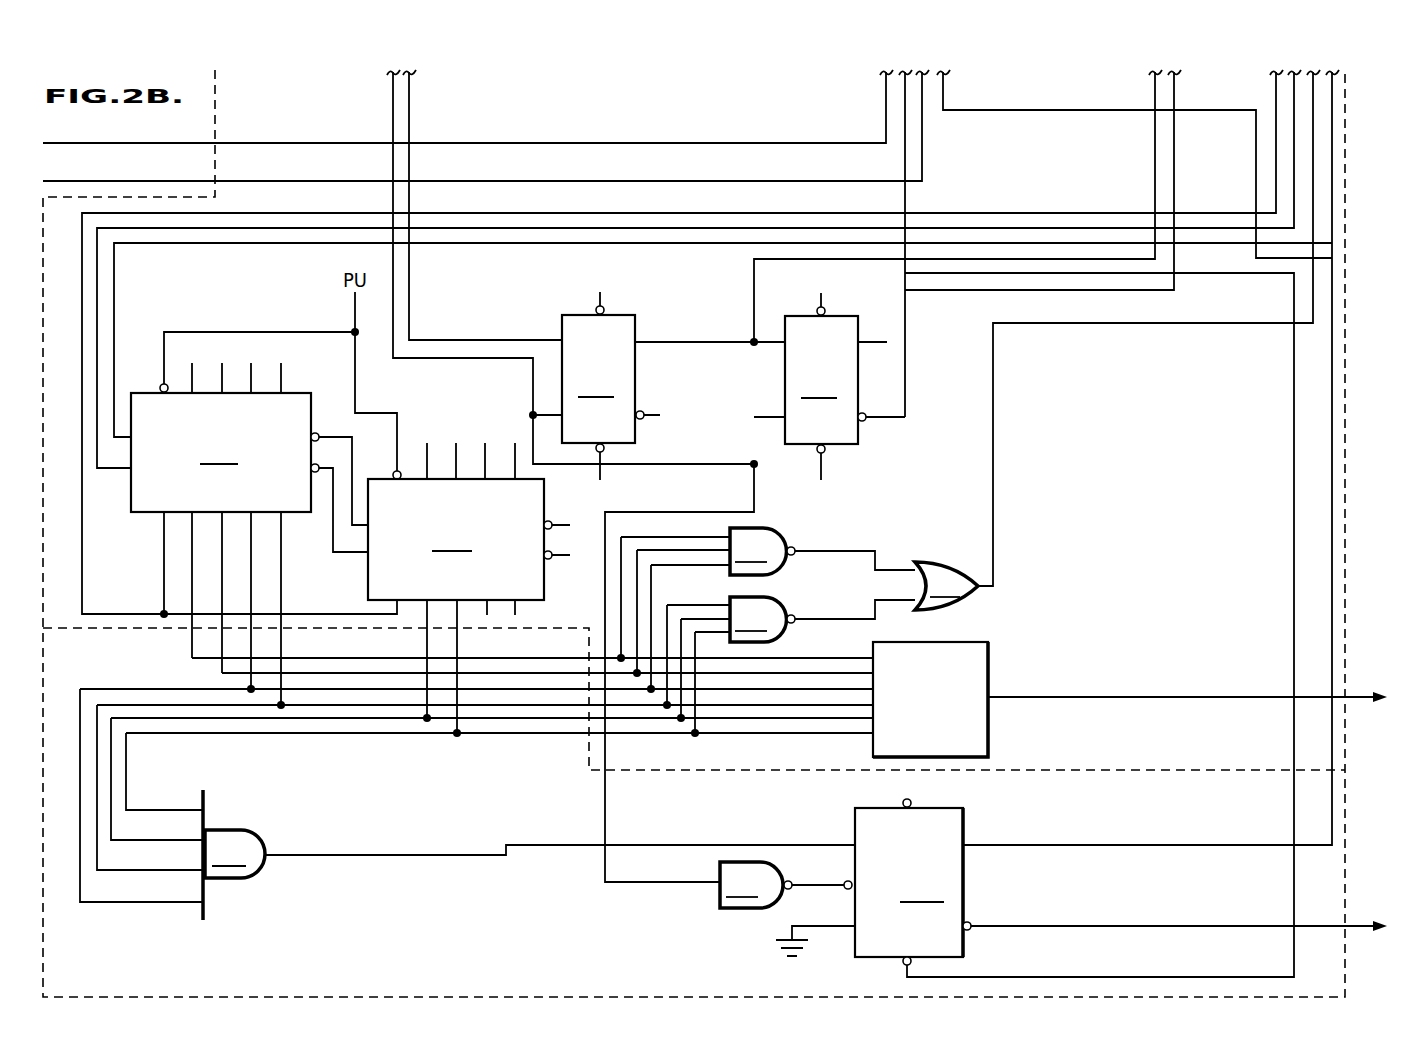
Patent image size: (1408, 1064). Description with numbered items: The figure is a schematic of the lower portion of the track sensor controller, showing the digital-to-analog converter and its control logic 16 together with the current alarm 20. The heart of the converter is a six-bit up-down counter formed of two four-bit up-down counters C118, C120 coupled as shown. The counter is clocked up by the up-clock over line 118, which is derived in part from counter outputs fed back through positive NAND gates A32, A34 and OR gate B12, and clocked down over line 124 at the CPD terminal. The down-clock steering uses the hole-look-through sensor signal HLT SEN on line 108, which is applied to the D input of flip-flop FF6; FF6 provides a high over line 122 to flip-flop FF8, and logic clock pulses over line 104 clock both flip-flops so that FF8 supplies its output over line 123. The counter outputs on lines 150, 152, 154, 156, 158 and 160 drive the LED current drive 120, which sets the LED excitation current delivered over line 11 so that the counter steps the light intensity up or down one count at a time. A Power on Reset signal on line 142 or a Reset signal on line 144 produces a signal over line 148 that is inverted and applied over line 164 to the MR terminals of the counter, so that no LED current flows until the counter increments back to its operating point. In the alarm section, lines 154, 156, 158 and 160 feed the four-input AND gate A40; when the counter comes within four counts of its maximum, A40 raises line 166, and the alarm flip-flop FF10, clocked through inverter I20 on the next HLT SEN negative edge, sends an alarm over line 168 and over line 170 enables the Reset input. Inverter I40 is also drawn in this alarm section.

The LED current drive line 11 is at (1080, 698).
The digital-to-analog converter and control logic 16 is at (43, 548).
The current alarm 20 is at (43, 697).
The logic clock line 104 is at (754, 433).
The HLT SEN line 108 is at (410, 290).
The up-clock line 118 is at (1330, 124).
The LED current drive 120 is at (976, 748).
The FF6 output line 122 is at (698, 340).
The FF8 output line 123 is at (1172, 97).
The down-clock line 124 is at (1294, 148).
The Power on Reset line 142 is at (882, 126).
The Reset line 144 is at (939, 130).
The reset signal line 148 is at (905, 210).
The counter output line 150 is at (192, 657).
The counter output line 152 is at (222, 672).
The counter output line 154 is at (131, 900).
The counter output line 156 is at (146, 867).
The counter output line 158 is at (176, 810).
The counter output line 160 is at (161, 838).
The master reset line 164 is at (1274, 97).
The AND gate A40 output line 166 is at (290, 856).
The alarm signal line 168 is at (1148, 926).
The FF10 enable line 170 is at (944, 97).
The four-bit up-down counter C118 is at (249, 534).
The four-bit up-down counter C120 is at (469, 588).
The flip-flop FF6 is at (611, 387).
The flip-flop FF8 is at (845, 387).
The alarm flip-flop FF10 is at (873, 871).
The positive NAND gate A32 is at (768, 608).
The positive NAND gate A34 is at (791, 665).
The dual four-input AND gate A40 is at (234, 855).
The OR gate B12 is at (1117, 340).
The inverter I20 is at (782, 885).
The inverter I40 is at (718, 906).